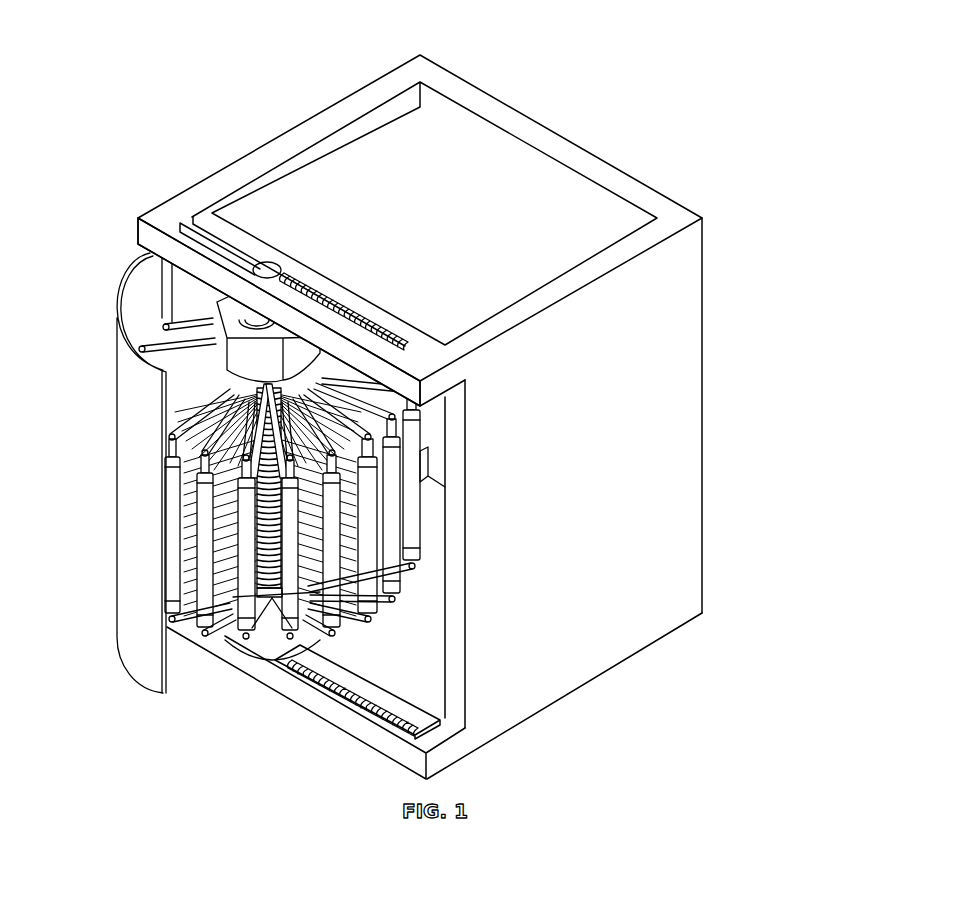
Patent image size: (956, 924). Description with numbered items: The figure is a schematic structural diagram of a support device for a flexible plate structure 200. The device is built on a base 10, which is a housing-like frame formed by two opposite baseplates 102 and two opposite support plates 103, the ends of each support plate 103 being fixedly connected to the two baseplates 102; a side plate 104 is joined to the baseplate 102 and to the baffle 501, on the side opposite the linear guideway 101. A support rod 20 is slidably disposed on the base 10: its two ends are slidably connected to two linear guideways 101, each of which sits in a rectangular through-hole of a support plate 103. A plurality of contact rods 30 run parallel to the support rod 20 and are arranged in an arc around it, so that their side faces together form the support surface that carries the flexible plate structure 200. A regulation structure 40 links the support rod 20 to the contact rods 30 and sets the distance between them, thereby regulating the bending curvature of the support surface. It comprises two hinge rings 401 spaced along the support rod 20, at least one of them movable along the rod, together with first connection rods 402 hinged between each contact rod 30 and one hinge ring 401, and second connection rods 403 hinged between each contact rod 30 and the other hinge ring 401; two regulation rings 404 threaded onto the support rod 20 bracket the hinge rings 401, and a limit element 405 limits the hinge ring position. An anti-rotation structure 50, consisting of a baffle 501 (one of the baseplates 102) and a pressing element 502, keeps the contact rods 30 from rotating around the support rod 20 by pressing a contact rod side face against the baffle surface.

The base 10 is at (277, 152).
The linear guideway 101 is at (143, 222).
The baseplate 102 is at (615, 363).
The support plate 103 is at (187, 240).
The side plate 104 is at (465, 140).
The support rod 20 is at (257, 275).
The contact rod 30 is at (207, 507).
The flexible plate structure 200 is at (133, 383).
The regulation structure 40 is at (487, 493).
The hinge ring 401 is at (228, 577).
The first connection rod 402 is at (325, 433).
The second connection rod 403 is at (175, 610).
The regulation ring 404 is at (330, 383).
The limit element 405 is at (277, 518).
The anti-rotation structure 50 is at (541, 469).
The baffle 501 is at (338, 215).
The pressing element 502 is at (400, 325).